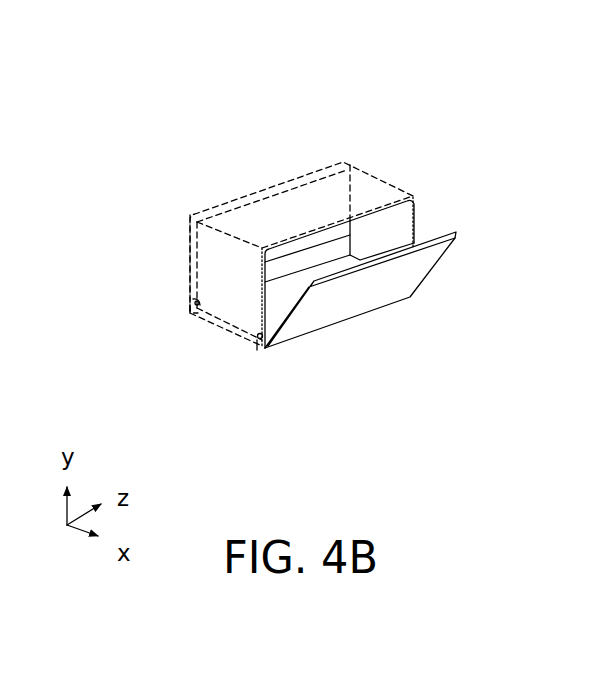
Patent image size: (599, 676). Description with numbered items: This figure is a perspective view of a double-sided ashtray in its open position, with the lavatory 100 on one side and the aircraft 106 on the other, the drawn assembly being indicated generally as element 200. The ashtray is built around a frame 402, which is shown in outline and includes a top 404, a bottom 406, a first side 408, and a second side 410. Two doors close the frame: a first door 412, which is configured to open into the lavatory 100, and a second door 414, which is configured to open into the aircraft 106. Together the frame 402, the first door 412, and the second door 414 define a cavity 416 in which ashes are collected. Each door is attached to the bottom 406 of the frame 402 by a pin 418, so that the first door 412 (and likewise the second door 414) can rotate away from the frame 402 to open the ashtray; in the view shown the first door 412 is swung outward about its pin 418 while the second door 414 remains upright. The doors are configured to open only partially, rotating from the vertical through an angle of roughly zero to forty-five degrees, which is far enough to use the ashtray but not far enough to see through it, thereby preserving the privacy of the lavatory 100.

The lavatory 100 is at (546, 194).
The aircraft 106 is at (70, 192).
The port assembly 200 is at (137, 106).
The frame 402 is at (149, 294).
The top 404 is at (297, 203).
The bottom 406 is at (242, 311).
The first side 408 is at (189, 295).
The second side 410 is at (394, 238).
The first door 412 is at (314, 326).
The second door 414 is at (190, 253).
The cavity 416 is at (245, 280).
The pin 418 is at (259, 341).